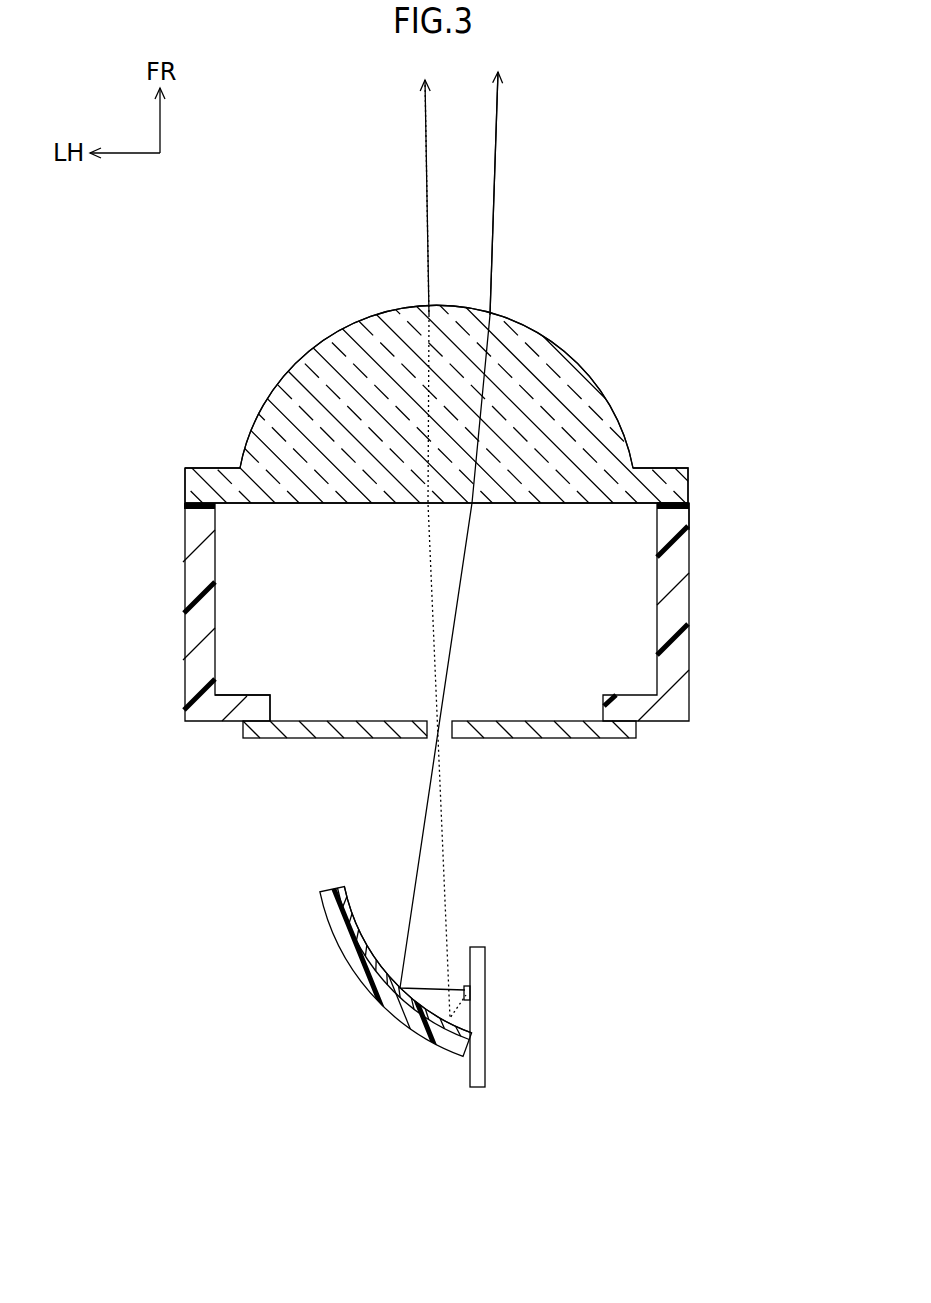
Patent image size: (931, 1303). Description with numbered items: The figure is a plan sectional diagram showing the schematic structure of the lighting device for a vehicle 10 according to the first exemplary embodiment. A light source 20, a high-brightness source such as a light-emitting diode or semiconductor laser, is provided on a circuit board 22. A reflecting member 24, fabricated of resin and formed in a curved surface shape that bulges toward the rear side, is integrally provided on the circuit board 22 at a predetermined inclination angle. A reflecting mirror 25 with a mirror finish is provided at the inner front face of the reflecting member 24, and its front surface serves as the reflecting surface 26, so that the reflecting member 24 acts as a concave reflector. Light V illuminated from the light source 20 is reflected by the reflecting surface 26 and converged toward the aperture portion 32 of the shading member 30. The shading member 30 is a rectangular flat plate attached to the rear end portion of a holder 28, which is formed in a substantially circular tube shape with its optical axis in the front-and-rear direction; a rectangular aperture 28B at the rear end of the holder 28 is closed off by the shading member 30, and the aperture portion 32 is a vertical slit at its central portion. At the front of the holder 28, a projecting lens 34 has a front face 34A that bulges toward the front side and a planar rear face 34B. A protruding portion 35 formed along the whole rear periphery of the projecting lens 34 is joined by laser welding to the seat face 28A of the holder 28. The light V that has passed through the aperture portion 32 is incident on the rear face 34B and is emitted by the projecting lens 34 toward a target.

The lighting device for a vehicle 10 is at (590, 280).
The light source 20 is at (465, 987).
The circuit board 22 is at (487, 1010).
The reflecting member 24 is at (375, 1006).
The reflecting mirror 25 is at (347, 888).
The reflecting surface 26 is at (360, 930).
The holder 28 is at (691, 615).
The seat face 28A is at (675, 502).
The aperture 28B is at (272, 695).
The shading member 30 is at (269, 741).
The aperture portion 32 is at (447, 738).
The projecting lens 34 is at (322, 332).
The front face 34A is at (517, 323).
The rear face 34B is at (318, 503).
The protruding portion 35 is at (187, 490).
The light V is at (432, 598).